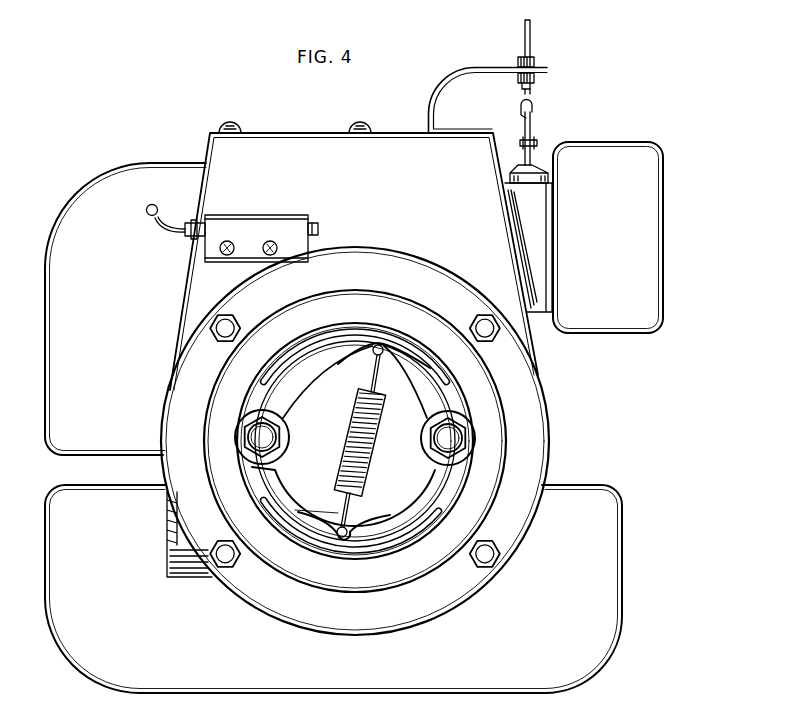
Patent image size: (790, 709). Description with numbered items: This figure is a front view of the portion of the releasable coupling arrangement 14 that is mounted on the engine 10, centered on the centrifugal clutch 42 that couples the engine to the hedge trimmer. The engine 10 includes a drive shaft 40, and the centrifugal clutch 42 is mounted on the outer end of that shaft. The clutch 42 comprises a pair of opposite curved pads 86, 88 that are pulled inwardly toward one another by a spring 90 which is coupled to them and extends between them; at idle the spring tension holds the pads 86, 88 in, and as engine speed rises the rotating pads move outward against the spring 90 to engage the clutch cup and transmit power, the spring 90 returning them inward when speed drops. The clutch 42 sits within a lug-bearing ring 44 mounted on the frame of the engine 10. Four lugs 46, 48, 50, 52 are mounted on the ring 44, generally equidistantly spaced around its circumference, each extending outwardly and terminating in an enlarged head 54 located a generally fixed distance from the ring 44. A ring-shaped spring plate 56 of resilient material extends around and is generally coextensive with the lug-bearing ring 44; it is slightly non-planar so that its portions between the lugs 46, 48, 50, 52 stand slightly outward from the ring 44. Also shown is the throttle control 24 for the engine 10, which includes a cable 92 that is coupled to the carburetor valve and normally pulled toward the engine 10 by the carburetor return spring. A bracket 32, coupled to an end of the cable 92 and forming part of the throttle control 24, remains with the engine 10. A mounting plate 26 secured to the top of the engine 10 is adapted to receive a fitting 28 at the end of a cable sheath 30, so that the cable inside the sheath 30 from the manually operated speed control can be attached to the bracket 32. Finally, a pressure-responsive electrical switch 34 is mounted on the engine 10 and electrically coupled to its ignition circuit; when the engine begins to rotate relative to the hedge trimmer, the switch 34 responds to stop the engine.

The engine 10 is at (630, 547).
The releasable coupling arrangement 14 is at (158, 472).
The throttle control 24 is at (538, 168).
The mounting plate 26 is at (431, 108).
The fitting 28 is at (534, 63).
The cable sheath 30 is at (530, 35).
The bracket 32 is at (531, 122).
The pressure-responsive electrical switch 34 is at (268, 222).
The drive shaft 40 is at (404, 439).
The centrifugal clutch 42 is at (446, 482).
The lug-bearing ring 44 is at (545, 401).
The lug 46 is at (494, 562).
The lug 48 is at (214, 576).
The lug 50 is at (213, 322).
The lug 52 is at (480, 312).
The enlarged head 54 is at (500, 334).
The spring plate 56 is at (178, 393).
The curved pad 86 is at (375, 330).
The curved pad 88 is at (358, 550).
The spring 90 is at (346, 453).
The cable 92 is at (532, 99).